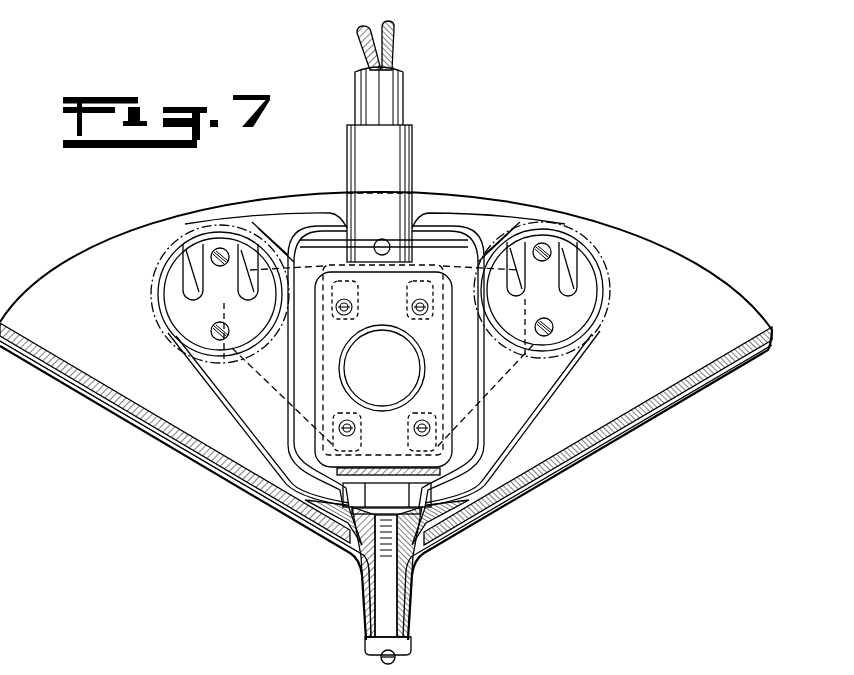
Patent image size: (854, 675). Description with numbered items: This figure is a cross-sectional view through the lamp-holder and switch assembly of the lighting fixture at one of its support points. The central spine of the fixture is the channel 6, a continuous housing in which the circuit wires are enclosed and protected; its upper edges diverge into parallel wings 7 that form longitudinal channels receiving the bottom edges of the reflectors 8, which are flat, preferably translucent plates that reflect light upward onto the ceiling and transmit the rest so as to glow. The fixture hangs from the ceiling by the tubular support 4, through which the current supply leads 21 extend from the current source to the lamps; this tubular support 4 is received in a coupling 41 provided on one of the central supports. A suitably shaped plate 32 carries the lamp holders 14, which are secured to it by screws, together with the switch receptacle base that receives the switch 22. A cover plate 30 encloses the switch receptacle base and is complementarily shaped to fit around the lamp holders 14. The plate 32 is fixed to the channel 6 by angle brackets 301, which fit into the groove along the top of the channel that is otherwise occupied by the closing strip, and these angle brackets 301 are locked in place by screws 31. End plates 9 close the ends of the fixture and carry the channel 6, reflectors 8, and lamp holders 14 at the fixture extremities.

The tubular support 4 is at (405, 98).
The coupling 41 is at (412, 160).
The channel 6 is at (413, 592).
The wings 7 is at (335, 520).
The reflectors 8 is at (113, 390).
The end plates 9 is at (472, 197).
The lamp holders 14 is at (175, 297).
The current supply leads 21 is at (395, 52).
The switch 22 is at (397, 380).
The cover plate 30 is at (563, 378).
The angle brackets 301 is at (360, 563).
The screws 31 is at (362, 603).
The plate 32 is at (495, 218).